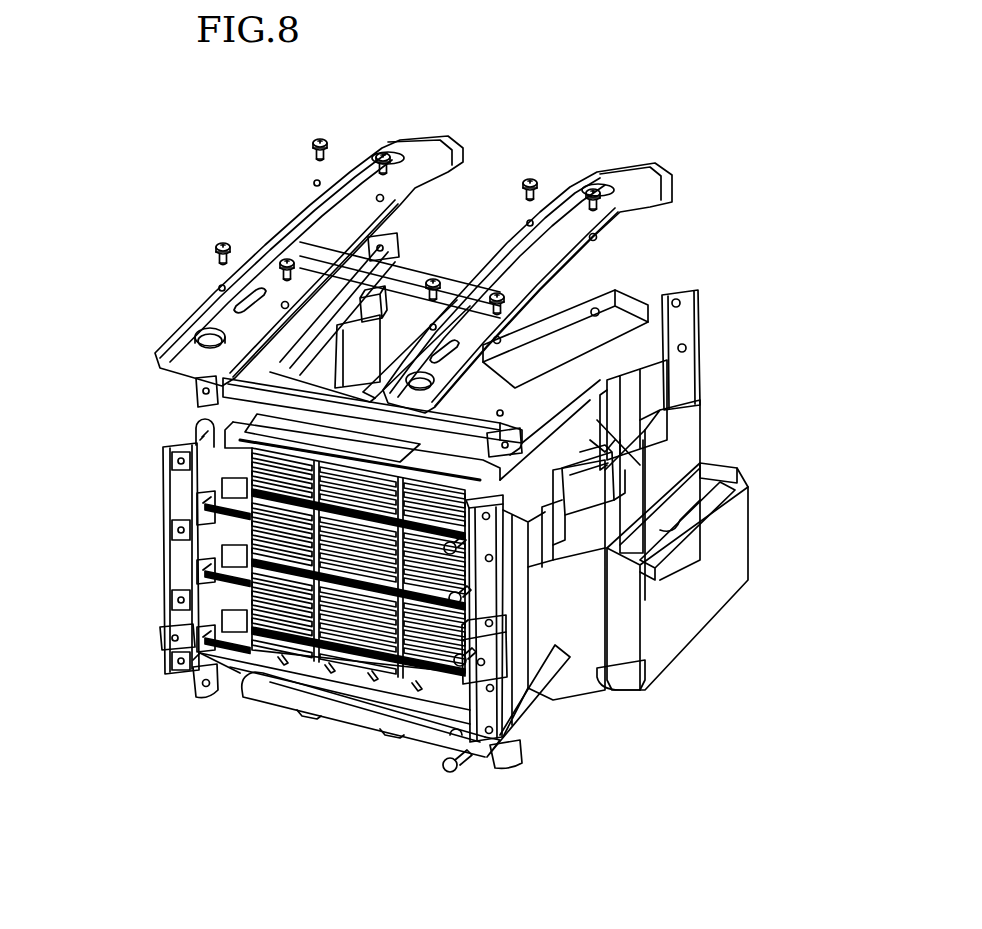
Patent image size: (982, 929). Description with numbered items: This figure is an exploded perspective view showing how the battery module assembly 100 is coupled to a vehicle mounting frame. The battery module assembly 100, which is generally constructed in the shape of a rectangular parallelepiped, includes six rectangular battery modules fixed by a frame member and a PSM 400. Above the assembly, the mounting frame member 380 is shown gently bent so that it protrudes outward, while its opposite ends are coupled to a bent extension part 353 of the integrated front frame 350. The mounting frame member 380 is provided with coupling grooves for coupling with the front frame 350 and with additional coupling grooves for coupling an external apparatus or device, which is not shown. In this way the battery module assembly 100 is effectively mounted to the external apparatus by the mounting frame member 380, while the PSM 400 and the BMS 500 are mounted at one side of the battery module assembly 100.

The battery module assembly 100 is at (145, 420).
The integrated front frame 350 is at (428, 250).
The bent extension part 353 is at (578, 300).
The mounting frame member 380 is at (313, 218).
The PSM 400 is at (750, 442).
The BMS 500 is at (720, 548).